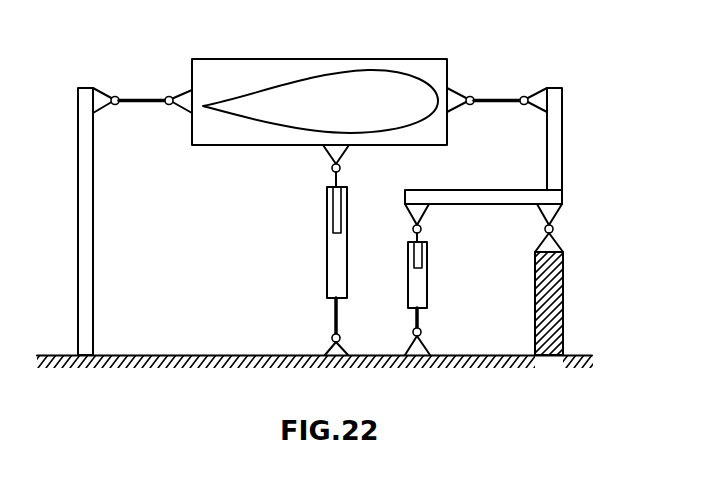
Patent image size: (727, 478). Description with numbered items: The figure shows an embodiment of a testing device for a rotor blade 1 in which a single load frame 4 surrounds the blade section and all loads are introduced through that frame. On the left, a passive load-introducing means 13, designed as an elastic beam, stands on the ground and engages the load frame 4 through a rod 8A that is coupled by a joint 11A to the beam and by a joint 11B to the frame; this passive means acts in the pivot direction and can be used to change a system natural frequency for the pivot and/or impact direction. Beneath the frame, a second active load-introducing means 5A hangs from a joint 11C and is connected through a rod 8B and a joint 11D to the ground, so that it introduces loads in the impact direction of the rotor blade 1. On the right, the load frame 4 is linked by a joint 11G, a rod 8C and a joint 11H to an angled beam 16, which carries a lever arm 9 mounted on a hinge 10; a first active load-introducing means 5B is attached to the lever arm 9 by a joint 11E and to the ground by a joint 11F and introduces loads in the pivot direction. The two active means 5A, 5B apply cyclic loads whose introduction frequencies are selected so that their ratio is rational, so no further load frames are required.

The rotor blade 1 is at (387, 70).
The load frame 4 is at (303, 59).
The second active load-introducing means 5A is at (347, 245).
The first active load-introducing means 5B is at (427, 283).
The rod 8A is at (140, 104).
The rod 8B is at (338, 313).
The rod 8C is at (497, 102).
The lever arm 9 is at (468, 190).
The hinge 10 is at (545, 229).
The joint 11A is at (118, 97).
The joint 11B is at (169, 105).
The joint 11C is at (332, 170).
The joint 11D is at (332, 335).
The joint 11E is at (421, 230).
The joint 11F is at (422, 333).
The joint 11G is at (470, 105).
The joint 11H is at (520, 96).
The passive load-introducing means 13 is at (77, 215).
The angled beam 16 is at (563, 168).